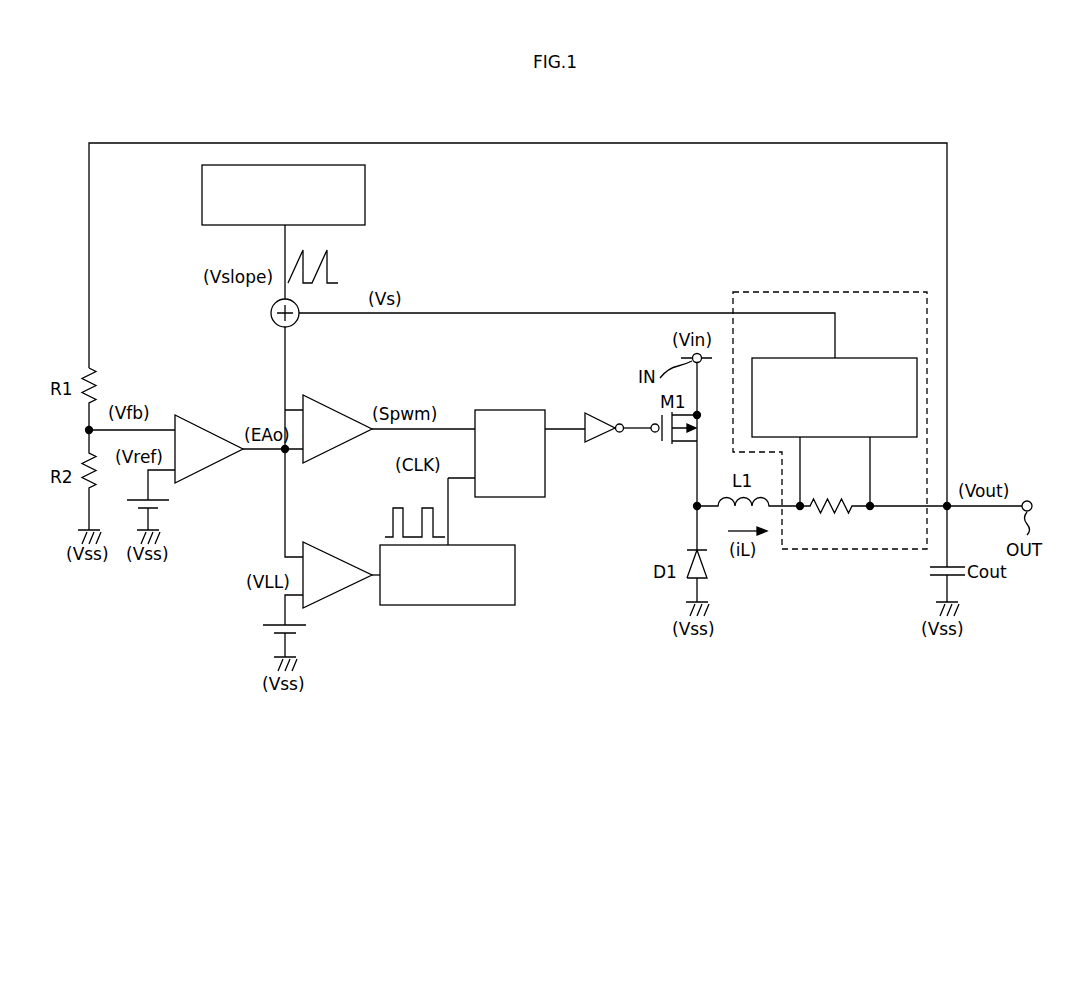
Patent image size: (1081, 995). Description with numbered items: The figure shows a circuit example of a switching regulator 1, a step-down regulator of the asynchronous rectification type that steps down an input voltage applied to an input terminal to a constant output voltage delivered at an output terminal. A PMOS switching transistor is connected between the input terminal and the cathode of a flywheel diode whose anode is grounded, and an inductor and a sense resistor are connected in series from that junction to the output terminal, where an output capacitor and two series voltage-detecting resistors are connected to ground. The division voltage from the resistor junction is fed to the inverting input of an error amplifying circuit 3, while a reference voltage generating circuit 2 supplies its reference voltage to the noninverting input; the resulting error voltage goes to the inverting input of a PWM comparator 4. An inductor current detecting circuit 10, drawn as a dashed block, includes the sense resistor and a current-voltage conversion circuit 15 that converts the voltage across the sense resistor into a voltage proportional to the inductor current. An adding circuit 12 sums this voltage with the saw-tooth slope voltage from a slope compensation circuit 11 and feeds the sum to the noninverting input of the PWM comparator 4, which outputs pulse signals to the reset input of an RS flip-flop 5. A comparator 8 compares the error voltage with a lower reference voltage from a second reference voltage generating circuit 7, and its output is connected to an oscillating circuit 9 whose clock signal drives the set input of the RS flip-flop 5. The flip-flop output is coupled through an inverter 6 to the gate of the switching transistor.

The switching regulator 1 is at (756, 124).
The reference voltage generating circuit 2 is at (170, 505).
The error amplifying circuit 3 is at (210, 415).
The PWM comparator 4 is at (335, 399).
The RS flip-flop 5 is at (508, 397).
The inverter 6 is at (601, 407).
The reference voltage generating circuit 7 is at (307, 630).
The comparator 8 is at (335, 547).
The oscillating circuit 9 is at (445, 607).
The inductor current detecting circuit 10 is at (877, 292).
The slope compensation circuit 11 is at (366, 190).
The adding circuit 12 is at (271, 313).
The current-voltage conversion circuit 15 is at (877, 358).